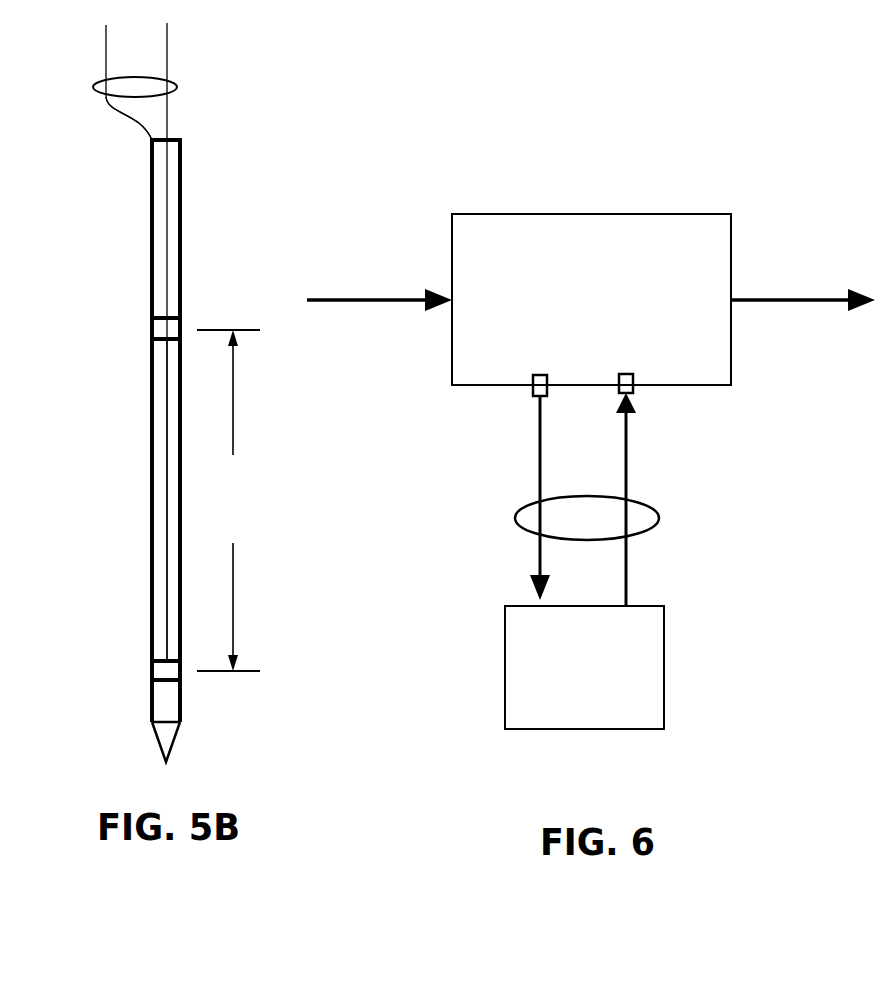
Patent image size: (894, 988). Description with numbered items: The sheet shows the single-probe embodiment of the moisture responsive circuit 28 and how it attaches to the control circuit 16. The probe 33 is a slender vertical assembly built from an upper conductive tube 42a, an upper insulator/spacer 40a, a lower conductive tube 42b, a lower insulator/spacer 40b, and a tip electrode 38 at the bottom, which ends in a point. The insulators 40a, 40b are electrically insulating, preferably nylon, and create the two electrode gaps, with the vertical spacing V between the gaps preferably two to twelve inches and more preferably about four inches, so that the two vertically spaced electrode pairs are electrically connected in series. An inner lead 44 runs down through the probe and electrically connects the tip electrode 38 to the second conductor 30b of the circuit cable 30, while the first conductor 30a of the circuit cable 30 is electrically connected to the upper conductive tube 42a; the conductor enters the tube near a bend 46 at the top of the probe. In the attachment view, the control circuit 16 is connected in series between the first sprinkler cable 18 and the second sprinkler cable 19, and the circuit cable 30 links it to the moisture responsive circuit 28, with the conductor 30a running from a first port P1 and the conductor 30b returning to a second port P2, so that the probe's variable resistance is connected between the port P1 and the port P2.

In FIG. 6, the control circuit 16 is at (600, 222).
In FIG. 6, the first sprinkler cable 18 is at (343, 297).
In FIG. 6, the second sprinkler cable 19 is at (760, 298).
In FIG. 6, the moisture responsive circuit 28 is at (522, 678).
In FIG. 5B, the circuit cable 30 is at (93, 87).
In FIG. 6, the circuit cable 30 is at (659, 518).
In FIG. 5B, the conductor 30a is at (106, 64).
In FIG. 6, the conductor 30a is at (537, 453).
In FIG. 5B, the second conductor 30b is at (169, 70).
In FIG. 6, the second conductor 30b is at (615, 453).
In FIG. 5B, the single probe 33 is at (234, 184).
In FIG. 5B, the tip electrode 38 is at (129, 680).
In FIG. 5B, the upper insulator/spacer 40a is at (160, 330).
In FIG. 5B, the lower insulator/spacer 40b is at (152, 672).
In FIG. 5B, the upper conductive tube 42a is at (151, 262).
In FIG. 5B, the lower conductive tube 42b is at (151, 548).
In FIG. 5B, the inner lead 44 is at (165, 507).
In FIG. 5B, the fiber bend 46 is at (142, 128).
In FIG. 6, the first port P1 is at (537, 375).
In FIG. 6, the second port P2 is at (620, 375).
In FIG. 5B, the vertical spacing V is at (228, 500).